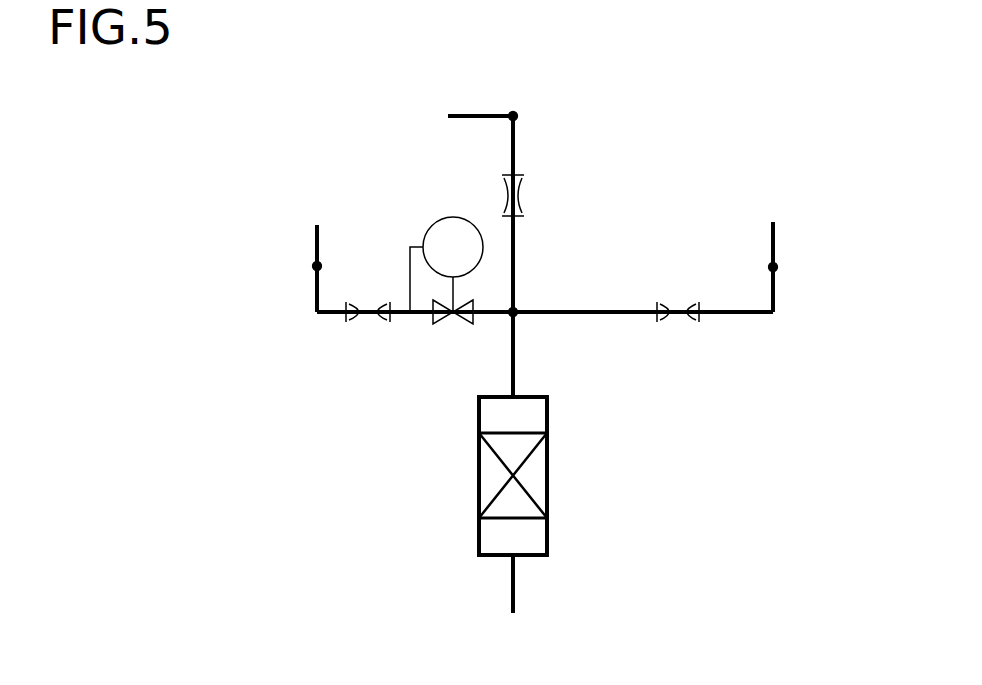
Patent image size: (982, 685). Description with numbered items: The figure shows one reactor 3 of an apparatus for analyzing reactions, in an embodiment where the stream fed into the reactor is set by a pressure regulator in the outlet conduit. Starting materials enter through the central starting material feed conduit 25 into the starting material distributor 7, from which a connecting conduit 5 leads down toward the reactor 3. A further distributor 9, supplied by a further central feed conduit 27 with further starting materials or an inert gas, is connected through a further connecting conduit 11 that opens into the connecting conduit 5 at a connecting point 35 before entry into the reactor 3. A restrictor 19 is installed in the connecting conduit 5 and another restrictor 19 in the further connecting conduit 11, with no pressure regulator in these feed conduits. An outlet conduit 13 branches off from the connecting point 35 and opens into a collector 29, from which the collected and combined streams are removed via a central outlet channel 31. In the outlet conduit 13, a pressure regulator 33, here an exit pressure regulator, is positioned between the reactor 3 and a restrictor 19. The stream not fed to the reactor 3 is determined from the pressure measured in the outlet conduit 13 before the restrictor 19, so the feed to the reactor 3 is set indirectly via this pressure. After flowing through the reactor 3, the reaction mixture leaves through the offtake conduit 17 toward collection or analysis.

The reactor 3 is at (549, 465).
The connecting conduit 5 is at (515, 140).
The starting material distributor 7 is at (516, 114).
The further distributor 9 is at (777, 268).
The further connecting conduit 11 is at (563, 315).
The outlet conduit 13 is at (312, 298).
The offtake conduit 17 is at (516, 590).
The restrictor 19 is at (503, 190).
The central starting material feed conduit 25 is at (468, 114).
The further central feed conduit 27 is at (777, 232).
The collector 29 is at (313, 266).
The central outlet channel 31 is at (312, 232).
The pressure regulator 33 is at (440, 325).
The connecting point 35 is at (507, 318).